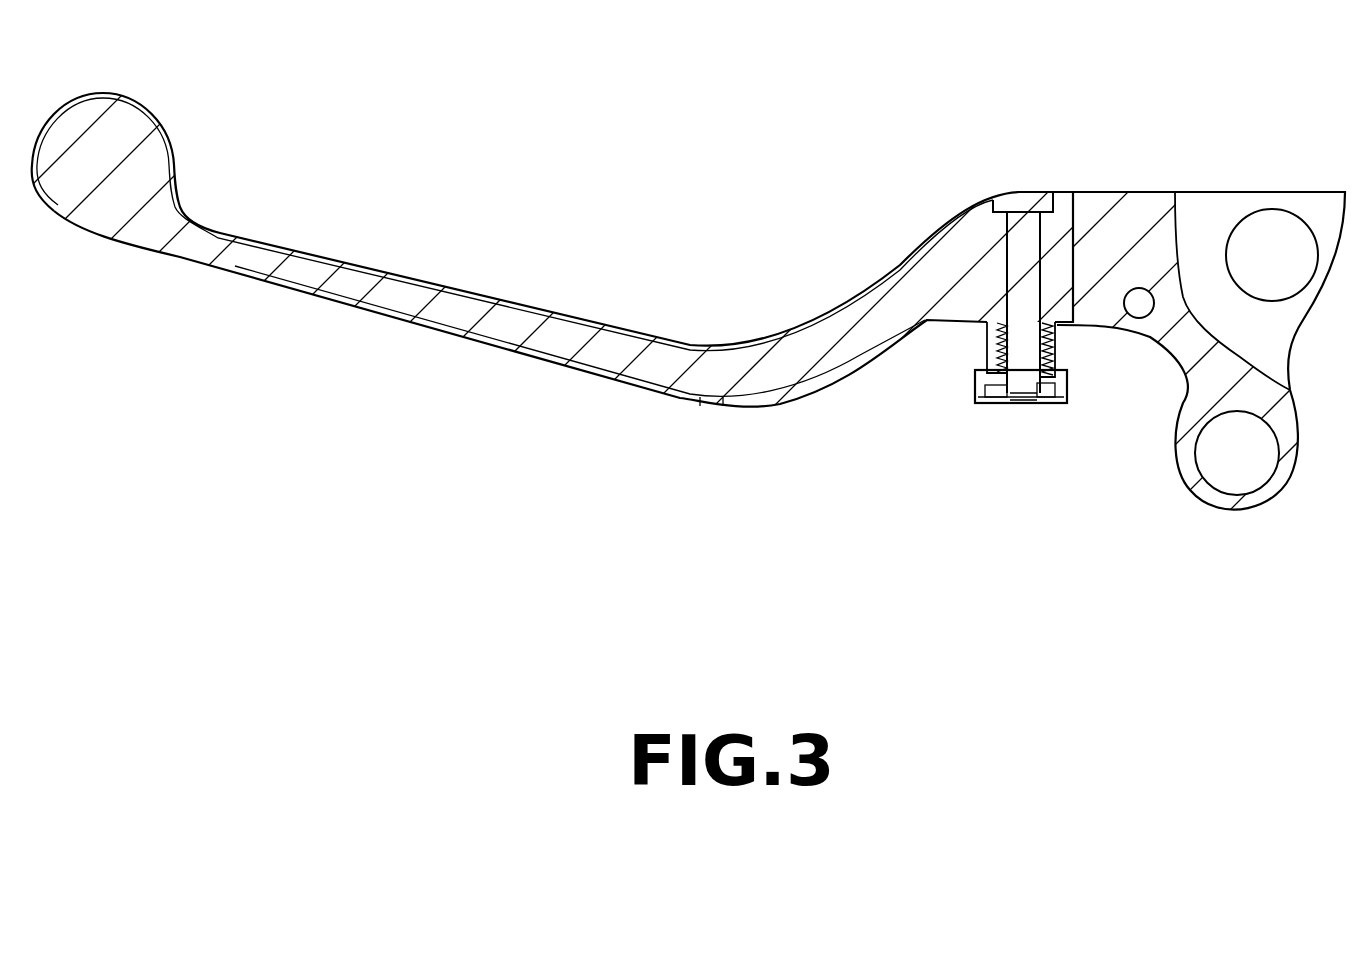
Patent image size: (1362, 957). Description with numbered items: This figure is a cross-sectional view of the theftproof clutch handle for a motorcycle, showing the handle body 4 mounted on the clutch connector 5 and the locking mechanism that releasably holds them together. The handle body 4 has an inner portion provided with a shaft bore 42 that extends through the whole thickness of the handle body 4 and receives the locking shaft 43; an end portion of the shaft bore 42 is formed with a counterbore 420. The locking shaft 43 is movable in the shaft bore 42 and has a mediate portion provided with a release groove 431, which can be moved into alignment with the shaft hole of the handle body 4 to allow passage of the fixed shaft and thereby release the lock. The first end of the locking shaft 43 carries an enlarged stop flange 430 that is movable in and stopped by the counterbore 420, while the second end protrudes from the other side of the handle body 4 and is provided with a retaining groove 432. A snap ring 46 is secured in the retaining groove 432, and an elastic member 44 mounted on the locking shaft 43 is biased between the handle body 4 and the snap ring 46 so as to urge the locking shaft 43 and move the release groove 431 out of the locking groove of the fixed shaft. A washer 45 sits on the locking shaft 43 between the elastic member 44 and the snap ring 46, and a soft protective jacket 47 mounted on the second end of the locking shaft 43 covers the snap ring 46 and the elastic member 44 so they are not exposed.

The handle body 4 is at (613, 347).
The clutch connector 5 is at (1212, 210).
The shaft bore 42 is at (1003, 235).
The counterbore 420 is at (1047, 197).
The enlarged stop flange 430 is at (1027, 203).
The release groove 431 is at (1010, 287).
The locking shaft 43 is at (1017, 312).
The elastic member 44 is at (1058, 360).
The washer 45 is at (977, 397).
The snap ring 46 is at (1057, 407).
The retaining groove 432 is at (1121, 481).
The soft protective jacket 47 is at (1020, 403).